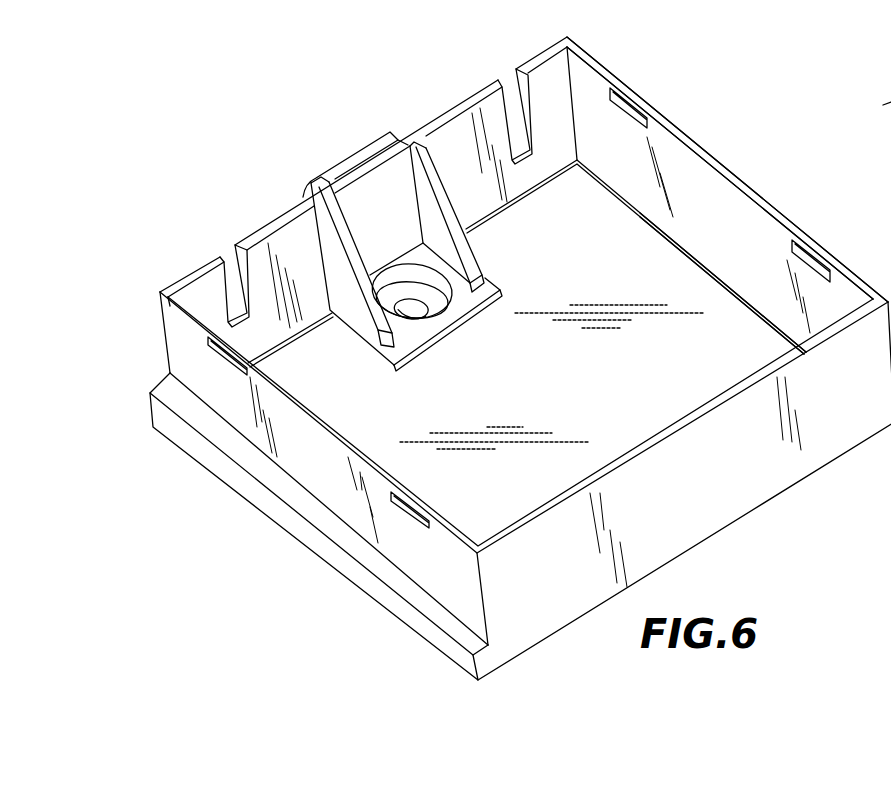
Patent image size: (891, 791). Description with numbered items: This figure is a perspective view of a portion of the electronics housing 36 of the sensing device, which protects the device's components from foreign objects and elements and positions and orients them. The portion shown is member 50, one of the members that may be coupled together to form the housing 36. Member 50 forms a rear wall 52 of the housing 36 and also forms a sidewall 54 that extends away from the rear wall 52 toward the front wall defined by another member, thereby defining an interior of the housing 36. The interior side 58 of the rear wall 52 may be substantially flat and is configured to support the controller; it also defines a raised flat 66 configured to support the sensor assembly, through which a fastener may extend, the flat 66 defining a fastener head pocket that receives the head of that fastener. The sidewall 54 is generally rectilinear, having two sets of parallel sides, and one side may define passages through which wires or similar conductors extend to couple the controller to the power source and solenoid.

The electronics housing 36 is at (258, 546).
The member 50 is at (720, 490).
The rear wall 52 is at (672, 270).
The sidewall 54 is at (690, 164).
The interior side 58 is at (728, 307).
The raised flat 66 is at (469, 292).